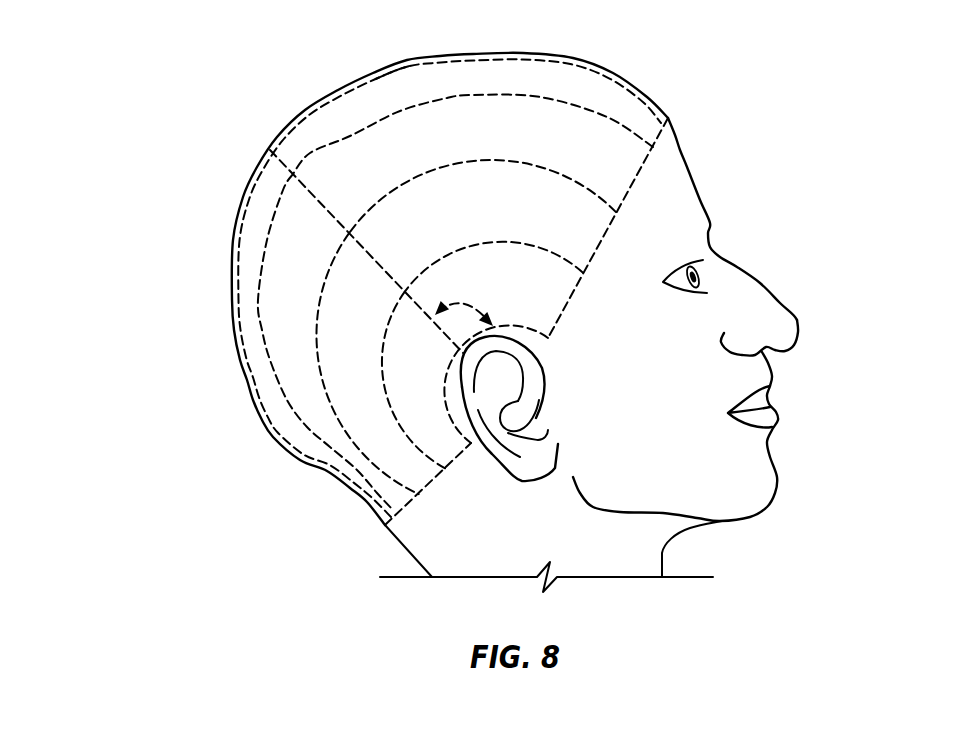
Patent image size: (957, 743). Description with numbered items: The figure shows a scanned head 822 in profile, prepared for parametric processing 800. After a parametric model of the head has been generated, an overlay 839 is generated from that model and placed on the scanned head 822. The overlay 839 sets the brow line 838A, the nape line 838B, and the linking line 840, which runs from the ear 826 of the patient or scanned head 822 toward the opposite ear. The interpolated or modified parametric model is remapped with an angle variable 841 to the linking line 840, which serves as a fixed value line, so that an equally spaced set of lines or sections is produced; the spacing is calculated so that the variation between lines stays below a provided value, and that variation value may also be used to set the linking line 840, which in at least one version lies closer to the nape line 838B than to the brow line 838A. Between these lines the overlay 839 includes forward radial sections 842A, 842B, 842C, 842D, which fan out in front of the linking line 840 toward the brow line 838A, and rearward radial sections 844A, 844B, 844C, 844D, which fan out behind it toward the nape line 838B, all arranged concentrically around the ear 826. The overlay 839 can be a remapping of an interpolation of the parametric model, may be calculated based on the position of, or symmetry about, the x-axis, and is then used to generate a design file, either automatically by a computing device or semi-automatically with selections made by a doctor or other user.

The parametric processing 800 is at (225, 110).
The scanned head 822 is at (606, 540).
The ear 826 is at (505, 377).
The brow line 838A is at (567, 312).
The nape line 838B is at (427, 497).
The overlay 839 is at (658, 77).
The linking line 840 is at (367, 255).
The angle variable 841 is at (470, 307).
The forward radial section 842A is at (470, 246).
The forward radial section 842B is at (450, 168).
The forward radial section 842C is at (447, 98).
The forward radial section 842D is at (373, 78).
The rearward radial section 844A is at (387, 400).
The rearward radial section 844B is at (323, 387).
The rearward radial section 844C is at (258, 295).
The rearward radial section 844D is at (233, 320).